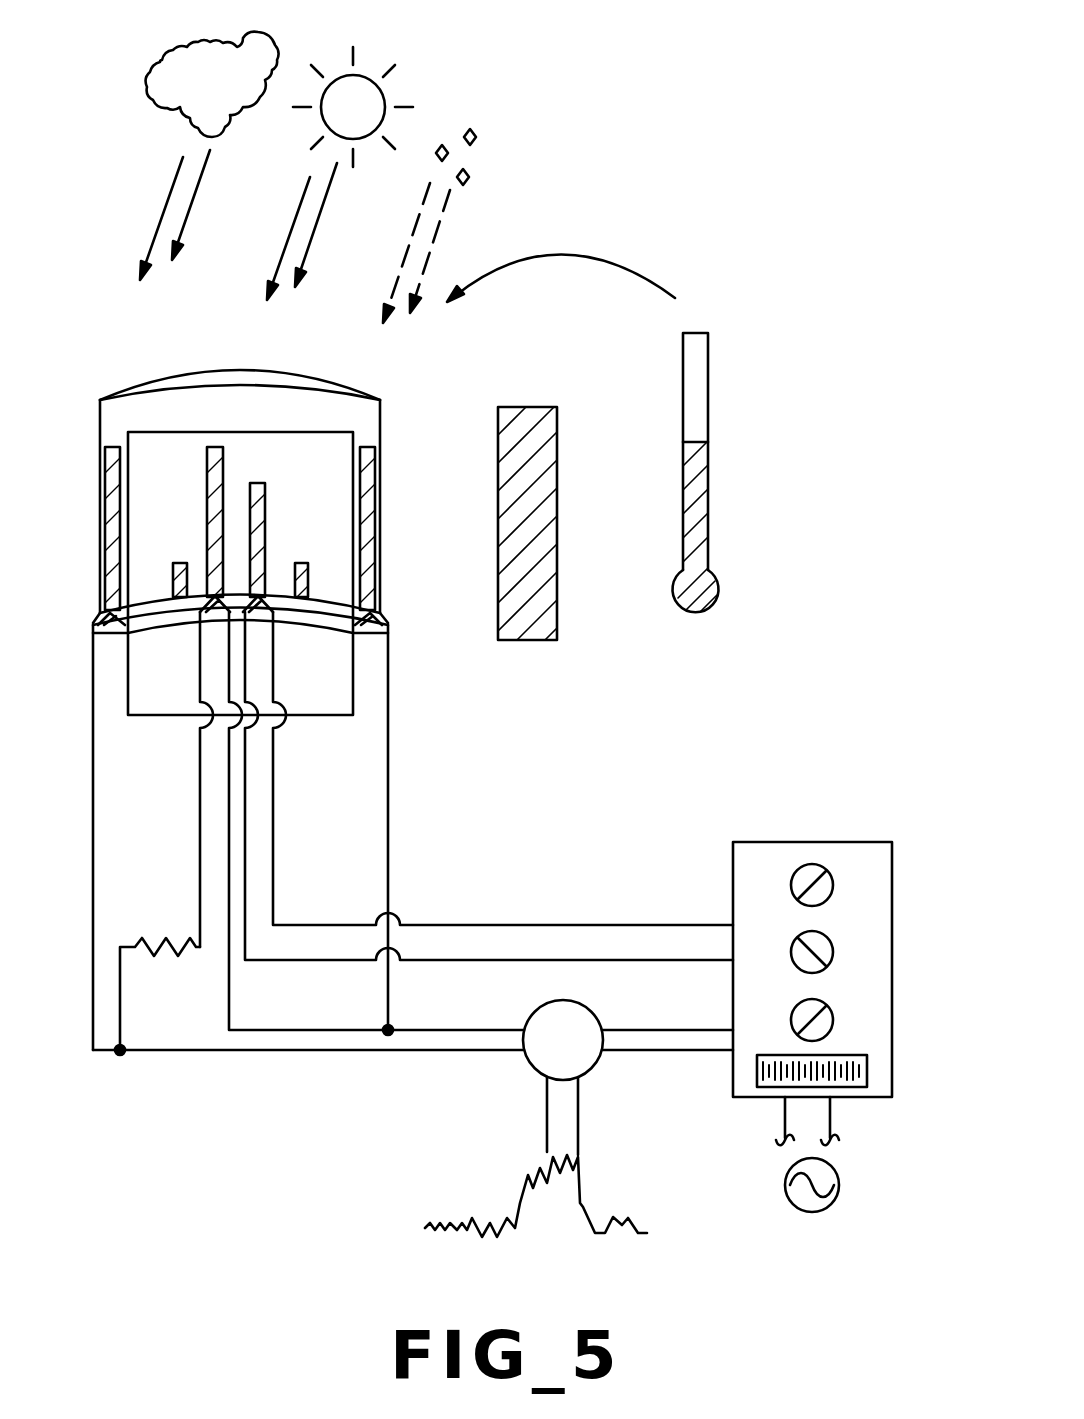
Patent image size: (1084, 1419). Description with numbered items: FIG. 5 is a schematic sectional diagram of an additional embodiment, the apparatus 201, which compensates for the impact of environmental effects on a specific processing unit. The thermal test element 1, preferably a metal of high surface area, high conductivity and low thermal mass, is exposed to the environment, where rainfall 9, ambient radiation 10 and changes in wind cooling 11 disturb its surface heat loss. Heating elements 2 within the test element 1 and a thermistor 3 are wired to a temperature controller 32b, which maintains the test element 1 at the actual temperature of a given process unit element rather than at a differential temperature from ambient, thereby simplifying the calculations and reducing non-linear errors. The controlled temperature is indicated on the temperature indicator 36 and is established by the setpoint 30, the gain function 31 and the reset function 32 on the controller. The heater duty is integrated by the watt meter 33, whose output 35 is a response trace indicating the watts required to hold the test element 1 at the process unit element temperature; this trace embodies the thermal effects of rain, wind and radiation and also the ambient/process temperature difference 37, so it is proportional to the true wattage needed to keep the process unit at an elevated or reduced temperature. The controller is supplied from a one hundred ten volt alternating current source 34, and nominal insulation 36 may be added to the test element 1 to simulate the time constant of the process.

The test element 1 is at (275, 370).
The electrodes 2 is at (103, 466).
The thermistor 3 is at (265, 510).
The rainfall 9 is at (490, 108).
The ambient radiation 10 is at (375, 48).
The wind cooling 11 is at (190, 25).
The setpoint 30 is at (833, 882).
The gain function 31 is at (833, 950).
The reset function 32 is at (833, 1013).
The temperature controller 32b is at (798, 842).
The watt meter 33 is at (533, 1017).
The 110 VAC power source 34 is at (840, 1182).
The output 35 is at (582, 1183).
The temperature indicator 36 is at (527, 405).
The ambient/process temperature difference 37 is at (710, 405).
The apparatus 201 is at (340, 1116).